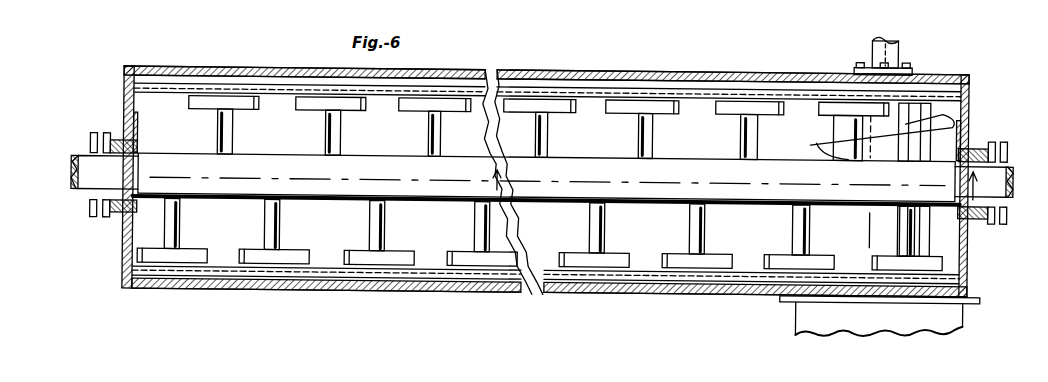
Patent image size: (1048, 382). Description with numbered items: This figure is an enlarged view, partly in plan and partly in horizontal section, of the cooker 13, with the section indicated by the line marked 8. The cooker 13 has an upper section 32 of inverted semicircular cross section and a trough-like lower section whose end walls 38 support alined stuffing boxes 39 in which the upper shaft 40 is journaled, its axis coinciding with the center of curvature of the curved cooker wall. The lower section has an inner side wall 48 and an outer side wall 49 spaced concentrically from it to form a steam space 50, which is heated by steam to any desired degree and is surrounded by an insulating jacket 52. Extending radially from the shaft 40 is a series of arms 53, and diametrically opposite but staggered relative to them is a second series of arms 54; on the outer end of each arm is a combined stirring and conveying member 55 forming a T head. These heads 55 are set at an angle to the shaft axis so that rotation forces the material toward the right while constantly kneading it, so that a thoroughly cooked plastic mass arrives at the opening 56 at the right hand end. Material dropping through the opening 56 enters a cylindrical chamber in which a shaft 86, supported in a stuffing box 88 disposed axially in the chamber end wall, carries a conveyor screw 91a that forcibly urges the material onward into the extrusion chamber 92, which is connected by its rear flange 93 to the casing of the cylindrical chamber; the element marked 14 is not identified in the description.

The section line 8- 8 is at (731, 181).
The cooker 13 is at (589, 97).
The paddle shaft end 14 is at (942, 252).
The upper section 32 is at (535, 68).
The end walls 38 is at (123, 72).
The stuffing boxes 39 is at (118, 136).
The upper shaft 40 is at (697, 160).
The inner side wall 48 is at (264, 88).
The outer side wall 49 is at (218, 72).
The steam space 50 is at (314, 80).
The insulating jacket 52 is at (703, 72).
The arms 53 is at (233, 134).
The second series of arms 54 is at (264, 222).
The combined stirring and conveying member 55 is at (212, 104).
The opening 56 is at (942, 224).
The shaft 86 is at (899, 32).
The stuffing box 88 is at (862, 60).
The screw 91a is at (815, 136).
The extrusion chamber 92 is at (812, 312).
The flange 93 is at (796, 302).